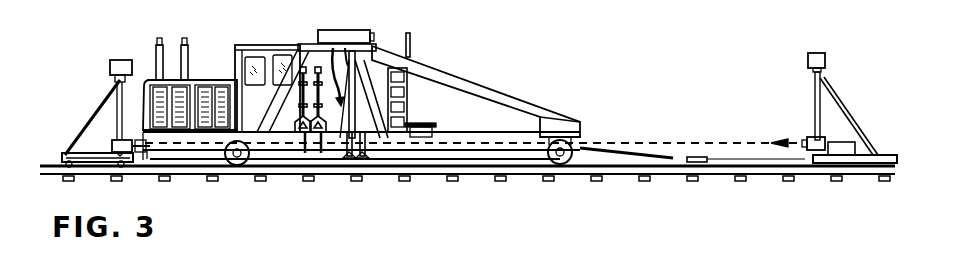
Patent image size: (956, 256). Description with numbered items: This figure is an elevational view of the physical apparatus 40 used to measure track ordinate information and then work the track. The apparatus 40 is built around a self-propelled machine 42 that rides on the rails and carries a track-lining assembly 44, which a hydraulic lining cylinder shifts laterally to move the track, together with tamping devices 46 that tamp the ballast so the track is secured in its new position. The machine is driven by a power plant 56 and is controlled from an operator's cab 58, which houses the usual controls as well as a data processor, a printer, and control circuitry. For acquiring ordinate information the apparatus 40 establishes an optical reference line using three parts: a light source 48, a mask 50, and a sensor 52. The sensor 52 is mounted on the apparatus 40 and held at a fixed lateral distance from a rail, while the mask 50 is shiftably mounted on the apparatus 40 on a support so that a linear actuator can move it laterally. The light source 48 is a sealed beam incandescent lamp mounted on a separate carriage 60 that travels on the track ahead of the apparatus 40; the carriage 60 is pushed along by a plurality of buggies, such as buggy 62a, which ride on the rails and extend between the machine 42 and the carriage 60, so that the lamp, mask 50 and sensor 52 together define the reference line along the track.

The apparatus 40 is at (473, 104).
The self-propelled machine 42 is at (460, 79).
The track-lining assembly 44 is at (363, 150).
The tamping devices 46 is at (318, 133).
The light source 48 is at (807, 141).
The mask 50 is at (347, 148).
The sensor 52 is at (108, 150).
The power plant 56 is at (210, 80).
The operator's cab 58 is at (303, 47).
The carriage 60 is at (852, 117).
The buggy 62a is at (707, 157).